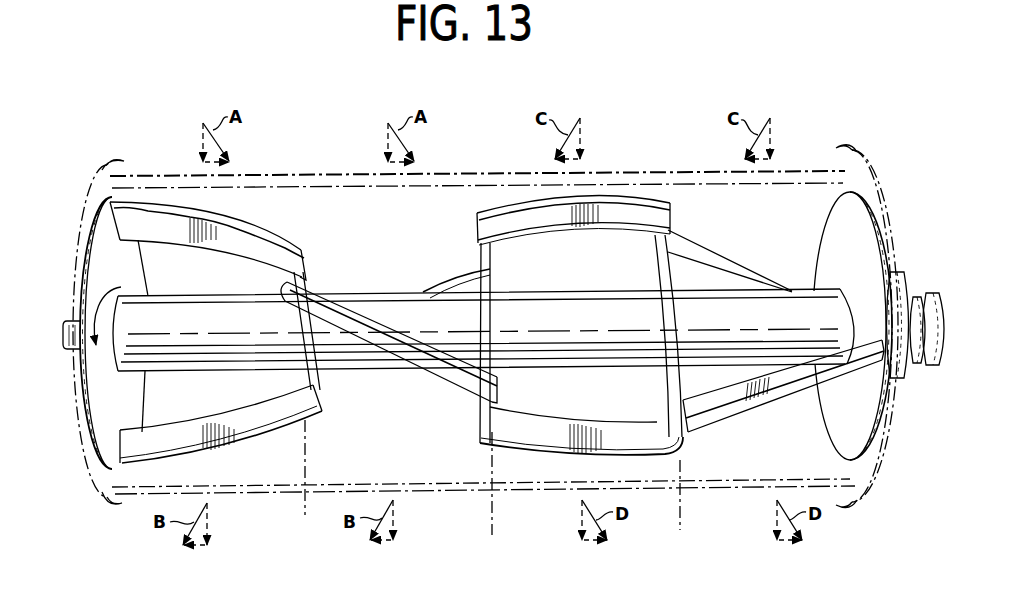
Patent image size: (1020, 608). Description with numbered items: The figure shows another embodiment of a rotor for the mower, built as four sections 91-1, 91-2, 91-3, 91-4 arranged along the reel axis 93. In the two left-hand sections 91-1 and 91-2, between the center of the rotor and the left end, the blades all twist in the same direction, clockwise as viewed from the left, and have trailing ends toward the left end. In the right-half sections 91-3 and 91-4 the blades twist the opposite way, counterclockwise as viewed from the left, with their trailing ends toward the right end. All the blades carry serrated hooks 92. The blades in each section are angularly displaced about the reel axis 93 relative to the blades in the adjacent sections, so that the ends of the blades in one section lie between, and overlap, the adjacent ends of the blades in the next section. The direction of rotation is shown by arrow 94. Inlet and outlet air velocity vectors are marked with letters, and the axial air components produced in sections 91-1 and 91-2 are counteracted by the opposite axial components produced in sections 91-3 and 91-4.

The first rotor section 91-1 is at (216, 339).
The second rotor section 91-2 is at (389, 373).
The third rotor section 91-3 is at (634, 339).
The fourth rotor section 91-4 is at (783, 406).
The serrated hooks 92 is at (278, 236).
The reel axis 93 is at (588, 304).
The arrow 94 is at (82, 283).